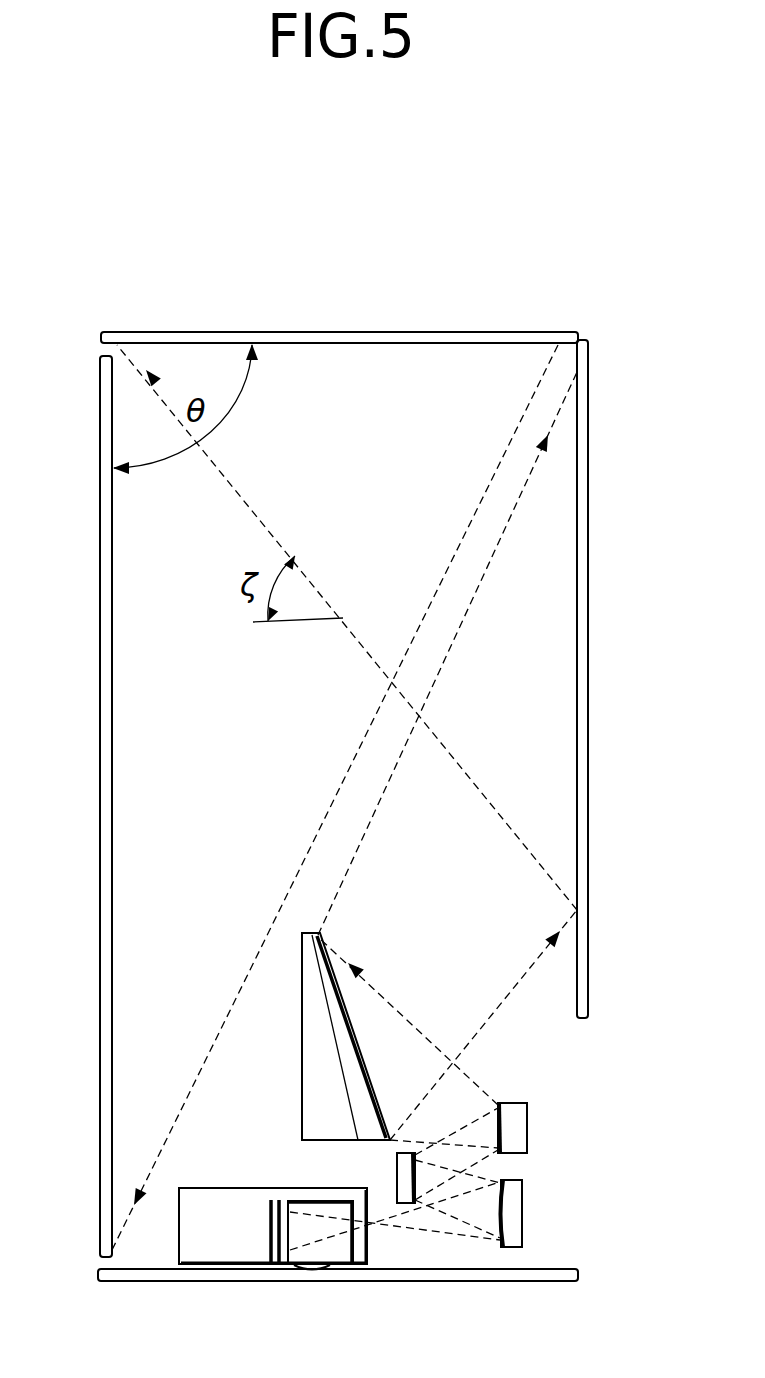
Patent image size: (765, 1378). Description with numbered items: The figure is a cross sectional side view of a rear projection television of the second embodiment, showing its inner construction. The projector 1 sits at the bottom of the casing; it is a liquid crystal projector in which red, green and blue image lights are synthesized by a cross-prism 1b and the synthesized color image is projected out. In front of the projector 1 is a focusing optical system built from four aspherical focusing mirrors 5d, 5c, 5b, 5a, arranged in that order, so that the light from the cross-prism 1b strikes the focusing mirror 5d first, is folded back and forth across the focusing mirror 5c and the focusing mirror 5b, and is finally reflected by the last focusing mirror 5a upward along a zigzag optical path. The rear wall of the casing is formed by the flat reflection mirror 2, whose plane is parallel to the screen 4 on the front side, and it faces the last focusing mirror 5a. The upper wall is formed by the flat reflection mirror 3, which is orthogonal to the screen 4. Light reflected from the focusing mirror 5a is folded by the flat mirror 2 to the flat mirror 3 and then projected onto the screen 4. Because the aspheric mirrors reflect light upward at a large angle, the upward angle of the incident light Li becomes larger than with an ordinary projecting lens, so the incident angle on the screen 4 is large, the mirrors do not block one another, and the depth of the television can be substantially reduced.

The projector 1 is at (233, 1247).
The cross-prism 1b is at (342, 1253).
The flat reflection mirror 2 is at (588, 720).
The flat reflection mirror 3 is at (297, 331).
The screen 4 is at (99, 898).
The aspherical focusing mirror 5a is at (302, 1073).
The aspherical focusing mirror 5b is at (530, 1130).
The aspherical focusing mirror 5c is at (397, 1176).
The aspherical focusing mirror 5d is at (525, 1215).
The incident light Li is at (252, 503).